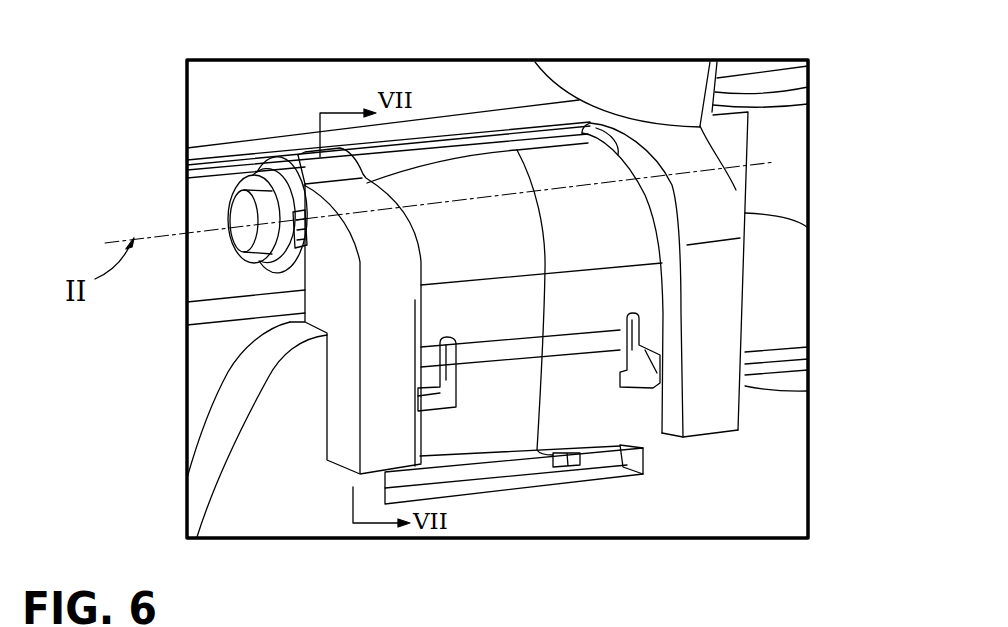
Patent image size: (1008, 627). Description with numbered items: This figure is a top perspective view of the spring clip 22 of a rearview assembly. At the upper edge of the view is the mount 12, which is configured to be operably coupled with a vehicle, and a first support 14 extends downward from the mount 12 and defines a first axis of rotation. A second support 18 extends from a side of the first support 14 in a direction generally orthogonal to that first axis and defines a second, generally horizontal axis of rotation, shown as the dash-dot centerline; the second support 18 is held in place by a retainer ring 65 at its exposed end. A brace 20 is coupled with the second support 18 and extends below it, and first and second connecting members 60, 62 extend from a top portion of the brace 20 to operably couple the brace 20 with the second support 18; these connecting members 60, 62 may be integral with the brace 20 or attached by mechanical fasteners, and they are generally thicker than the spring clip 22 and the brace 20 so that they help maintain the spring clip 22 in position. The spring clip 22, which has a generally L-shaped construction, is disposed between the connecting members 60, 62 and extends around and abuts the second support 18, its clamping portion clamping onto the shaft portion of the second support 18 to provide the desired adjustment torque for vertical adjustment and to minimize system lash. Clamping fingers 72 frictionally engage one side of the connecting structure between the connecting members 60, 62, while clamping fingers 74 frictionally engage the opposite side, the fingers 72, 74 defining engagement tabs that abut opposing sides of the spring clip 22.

The mount 12 is at (607, 80).
The first support 14 is at (773, 130).
The second support 18 is at (243, 213).
The brace 20 is at (730, 493).
The spring clip 22 is at (583, 297).
The first connecting member 60 is at (380, 332).
The second connecting member 62 is at (717, 264).
The retainer ring 65 is at (250, 262).
The clamping fingers 72 is at (428, 413).
The clamping fingers 74 is at (640, 388).